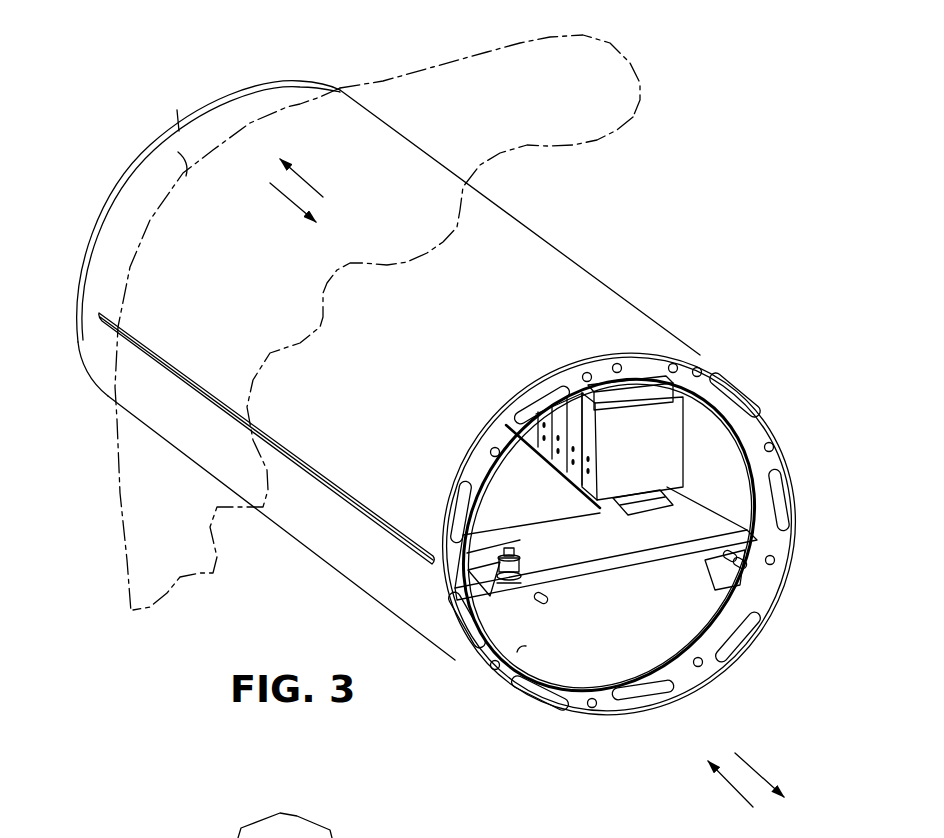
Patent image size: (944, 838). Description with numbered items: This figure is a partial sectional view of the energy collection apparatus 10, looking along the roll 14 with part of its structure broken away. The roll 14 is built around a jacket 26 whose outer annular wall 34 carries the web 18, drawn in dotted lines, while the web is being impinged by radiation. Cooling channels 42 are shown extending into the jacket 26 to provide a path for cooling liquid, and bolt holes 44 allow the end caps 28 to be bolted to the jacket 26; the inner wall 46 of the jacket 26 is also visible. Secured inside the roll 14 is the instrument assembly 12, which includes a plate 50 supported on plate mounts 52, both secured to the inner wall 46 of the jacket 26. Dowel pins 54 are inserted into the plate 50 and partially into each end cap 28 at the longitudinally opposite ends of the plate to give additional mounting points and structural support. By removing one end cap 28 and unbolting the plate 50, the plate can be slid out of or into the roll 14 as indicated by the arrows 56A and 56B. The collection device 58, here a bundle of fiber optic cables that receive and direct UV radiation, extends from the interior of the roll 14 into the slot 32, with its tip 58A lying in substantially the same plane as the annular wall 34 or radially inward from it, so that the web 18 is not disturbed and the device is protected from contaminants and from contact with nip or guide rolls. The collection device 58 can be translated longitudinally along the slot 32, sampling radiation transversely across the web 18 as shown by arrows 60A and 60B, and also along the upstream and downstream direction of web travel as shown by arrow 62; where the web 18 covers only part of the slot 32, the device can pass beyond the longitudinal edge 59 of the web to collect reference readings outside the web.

The energy collection apparatus 10 is at (760, 185).
The instrument assembly 12 is at (614, 602).
The roll 14 is at (622, 718).
The web 18 is at (591, 96).
The jacket 26 is at (549, 285).
The end cap 28 is at (262, 81).
The slot 32 is at (317, 481).
The annular wall 34 is at (505, 234).
The cooling channels 42 is at (535, 408).
The bolt holes 44 is at (695, 370).
The inner wall 46 is at (517, 652).
The plate 50 is at (666, 568).
The plate mounts 52 is at (490, 612).
The dowel pins 54 is at (537, 602).
The arrow 56A is at (732, 790).
The arrow 56B is at (753, 767).
The collection device 58 is at (95, 319).
The tip 58A is at (105, 355).
The longitudinal edge 59 is at (163, 121).
The arrow 60A is at (281, 200).
The arrow 60B is at (300, 181).
The arrow 62 is at (466, 77).